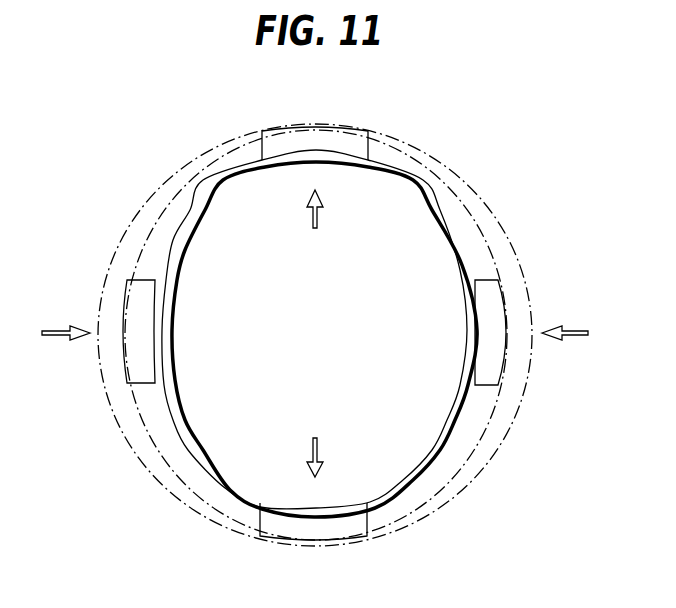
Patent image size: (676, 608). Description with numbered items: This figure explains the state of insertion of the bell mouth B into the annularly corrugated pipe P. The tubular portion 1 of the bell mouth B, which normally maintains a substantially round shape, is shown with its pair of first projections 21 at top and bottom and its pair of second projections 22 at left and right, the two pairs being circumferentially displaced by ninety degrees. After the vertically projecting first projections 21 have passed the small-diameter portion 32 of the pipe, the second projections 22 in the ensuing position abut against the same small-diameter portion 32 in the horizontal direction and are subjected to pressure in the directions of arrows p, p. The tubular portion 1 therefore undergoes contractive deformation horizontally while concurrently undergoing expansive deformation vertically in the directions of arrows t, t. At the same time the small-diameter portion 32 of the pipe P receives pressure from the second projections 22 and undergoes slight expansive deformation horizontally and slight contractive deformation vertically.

The tubular portion 1 is at (400, 176).
The first projections 21 is at (283, 138).
The second projections 22 is at (135, 364).
The small-diameter portion 32 is at (515, 273).
The bell mouth B is at (448, 206).
The pipe P is at (512, 226).
The arrows t is at (315, 333).
The arrows p is at (315, 333).